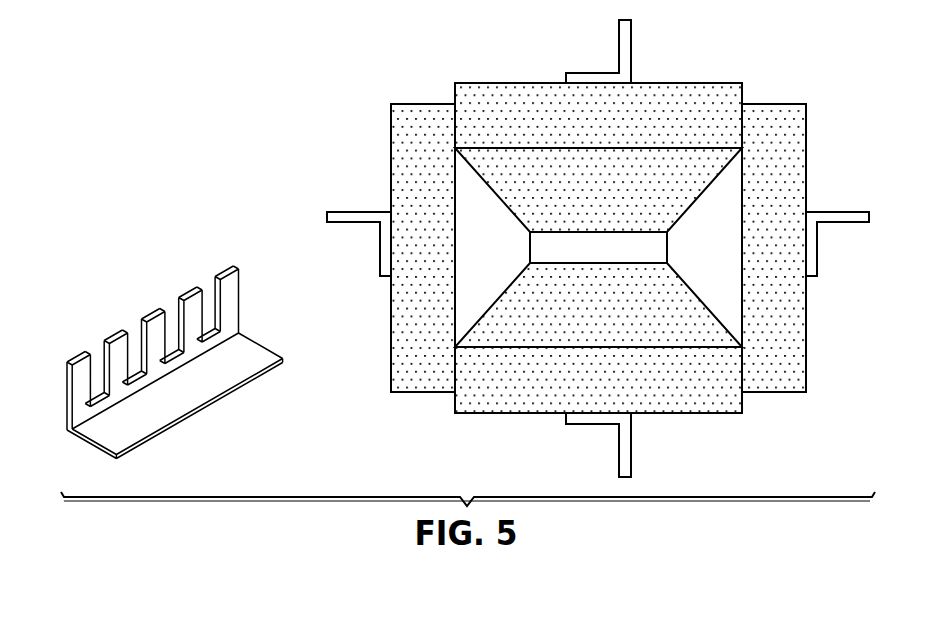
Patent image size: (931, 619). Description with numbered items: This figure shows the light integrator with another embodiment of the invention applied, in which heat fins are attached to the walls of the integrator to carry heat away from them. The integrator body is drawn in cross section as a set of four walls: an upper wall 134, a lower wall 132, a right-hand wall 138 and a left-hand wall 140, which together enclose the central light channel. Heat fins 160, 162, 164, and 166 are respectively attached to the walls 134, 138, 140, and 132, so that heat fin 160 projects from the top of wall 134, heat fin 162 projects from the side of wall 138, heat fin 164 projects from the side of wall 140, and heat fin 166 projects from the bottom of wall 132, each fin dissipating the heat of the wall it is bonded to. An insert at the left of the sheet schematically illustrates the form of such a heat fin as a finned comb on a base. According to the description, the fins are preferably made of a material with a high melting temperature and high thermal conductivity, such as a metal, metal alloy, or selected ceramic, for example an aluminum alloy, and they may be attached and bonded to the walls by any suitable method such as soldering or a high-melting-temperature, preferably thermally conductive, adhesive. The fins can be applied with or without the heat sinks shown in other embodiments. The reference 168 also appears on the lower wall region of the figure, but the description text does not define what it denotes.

The wall 132 is at (620, 392).
The wall 134 is at (620, 127).
The wall 138 is at (748, 240).
The wall 140 is at (448, 239).
The heat fin 160 is at (631, 53).
The heat fin 162 is at (842, 225).
The heat fin 164 is at (355, 225).
The heat fin 166 is at (619, 447).
The bottom surface 168 is at (712, 413).